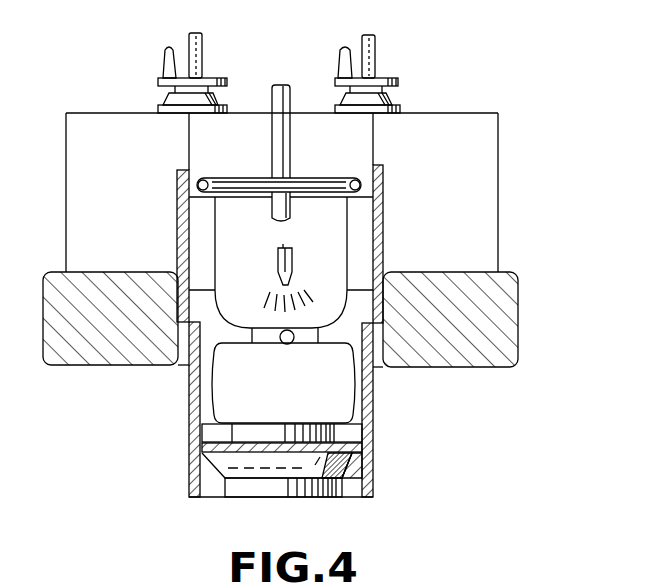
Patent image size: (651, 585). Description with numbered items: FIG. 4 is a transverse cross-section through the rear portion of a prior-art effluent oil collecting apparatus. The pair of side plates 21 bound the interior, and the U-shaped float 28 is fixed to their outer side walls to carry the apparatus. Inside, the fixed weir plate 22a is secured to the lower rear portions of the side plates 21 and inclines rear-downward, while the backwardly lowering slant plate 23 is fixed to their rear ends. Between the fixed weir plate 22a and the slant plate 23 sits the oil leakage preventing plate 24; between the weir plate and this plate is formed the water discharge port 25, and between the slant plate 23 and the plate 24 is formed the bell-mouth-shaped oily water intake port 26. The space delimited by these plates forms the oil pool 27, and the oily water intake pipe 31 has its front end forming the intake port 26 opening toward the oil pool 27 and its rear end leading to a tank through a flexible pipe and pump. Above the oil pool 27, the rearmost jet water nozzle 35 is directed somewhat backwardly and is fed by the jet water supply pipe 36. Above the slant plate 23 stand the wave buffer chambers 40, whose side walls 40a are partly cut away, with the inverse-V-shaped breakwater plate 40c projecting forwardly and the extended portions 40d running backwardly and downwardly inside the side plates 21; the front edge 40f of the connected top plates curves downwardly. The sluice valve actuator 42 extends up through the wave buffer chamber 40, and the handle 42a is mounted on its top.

The wave buffer chamber 40 is at (441, 111).
The side wall 40a is at (95, 133).
The front edge of the top plates 40f is at (250, 157).
The jet water supply pipe 36 is at (289, 150).
The side plate 21 is at (176, 200).
The extended portion of the side walls 40d is at (195, 233).
The breakwater plate 40c is at (340, 229).
The jet water nozzle 35 is at (291, 262).
The U-shaped float 28 is at (78, 338).
The slant plate 23 is at (369, 367).
The oily water intake port 26 is at (263, 338).
The oily water intake pipe 31 is at (287, 350).
The oil pool 27 is at (343, 395).
The oil leakage preventing plate 24 is at (338, 415).
The water discharge port 25 is at (233, 431).
The fixed weir plate 22a is at (350, 467).
The handle 42a is at (164, 48).
The sluice valve actuator 42 is at (377, 50).